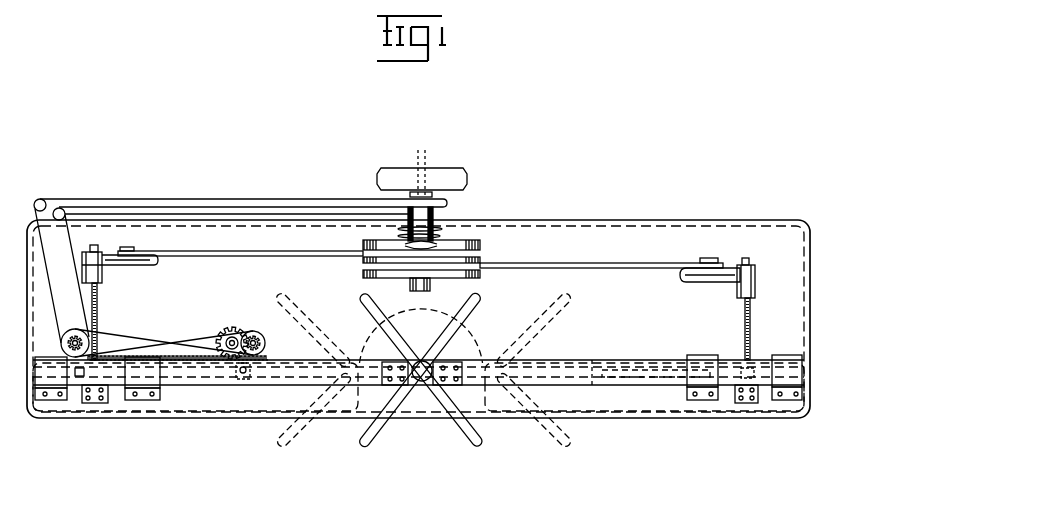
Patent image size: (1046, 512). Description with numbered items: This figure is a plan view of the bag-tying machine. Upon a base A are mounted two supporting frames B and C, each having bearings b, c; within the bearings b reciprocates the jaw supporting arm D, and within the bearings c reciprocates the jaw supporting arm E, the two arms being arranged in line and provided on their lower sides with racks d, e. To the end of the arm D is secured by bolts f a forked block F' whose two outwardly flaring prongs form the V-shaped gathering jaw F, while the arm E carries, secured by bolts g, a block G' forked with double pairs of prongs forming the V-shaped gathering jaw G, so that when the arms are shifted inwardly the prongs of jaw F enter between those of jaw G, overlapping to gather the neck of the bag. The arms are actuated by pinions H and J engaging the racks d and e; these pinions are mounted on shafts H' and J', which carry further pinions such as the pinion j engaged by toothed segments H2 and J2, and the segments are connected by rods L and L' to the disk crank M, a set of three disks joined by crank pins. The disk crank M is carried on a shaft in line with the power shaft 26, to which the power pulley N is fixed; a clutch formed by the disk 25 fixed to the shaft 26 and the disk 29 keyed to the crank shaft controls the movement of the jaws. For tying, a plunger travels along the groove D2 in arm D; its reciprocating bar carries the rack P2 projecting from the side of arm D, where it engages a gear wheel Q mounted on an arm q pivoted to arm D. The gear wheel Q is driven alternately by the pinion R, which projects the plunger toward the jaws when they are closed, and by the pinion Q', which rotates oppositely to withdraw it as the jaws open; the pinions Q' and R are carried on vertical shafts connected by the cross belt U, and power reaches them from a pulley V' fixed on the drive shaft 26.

The base A is at (571, 418).
The supporting frame B is at (47, 400).
The supporting frame C is at (703, 401).
The jaw supporting arm D is at (325, 382).
The groove D2 is at (343, 358).
The jaw supporting arm E is at (526, 382).
The V-shaped gathering jaw F is at (538, 369).
The forked block F' is at (420, 373).
The V-shaped gathering jaw G is at (421, 372).
The forked block G' is at (437, 361).
The pinion H is at (96, 408).
The shaft H' is at (105, 321).
The toothed segment H2 is at (160, 263).
The pinion J is at (746, 409).
The shaft J' is at (758, 328).
The toothed segment J2 is at (712, 283).
The pinion j is at (750, 259).
The rod L is at (240, 244).
The rod L' is at (601, 257).
The disk crank M is at (460, 242).
The power pulley N is at (460, 170).
The rack P2 is at (183, 356).
The gear wheel Q is at (232, 332).
The pinion Q' is at (64, 340).
The pinion R is at (258, 336).
The cross belt U is at (106, 340).
The pulley V' is at (243, 192).
The bearing b is at (93, 247).
The bearing c is at (787, 367).
The rack d is at (211, 382).
The rack e is at (628, 377).
The bolts f is at (390, 362).
The bolts g is at (462, 364).
The arm q is at (240, 379).
The disk 25 is at (440, 230).
The power shaft 26 is at (421, 165).
The disk 29 is at (400, 237).